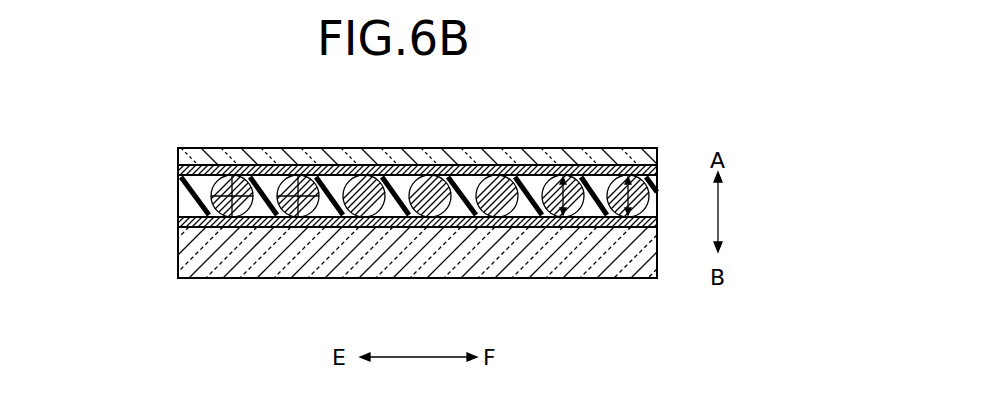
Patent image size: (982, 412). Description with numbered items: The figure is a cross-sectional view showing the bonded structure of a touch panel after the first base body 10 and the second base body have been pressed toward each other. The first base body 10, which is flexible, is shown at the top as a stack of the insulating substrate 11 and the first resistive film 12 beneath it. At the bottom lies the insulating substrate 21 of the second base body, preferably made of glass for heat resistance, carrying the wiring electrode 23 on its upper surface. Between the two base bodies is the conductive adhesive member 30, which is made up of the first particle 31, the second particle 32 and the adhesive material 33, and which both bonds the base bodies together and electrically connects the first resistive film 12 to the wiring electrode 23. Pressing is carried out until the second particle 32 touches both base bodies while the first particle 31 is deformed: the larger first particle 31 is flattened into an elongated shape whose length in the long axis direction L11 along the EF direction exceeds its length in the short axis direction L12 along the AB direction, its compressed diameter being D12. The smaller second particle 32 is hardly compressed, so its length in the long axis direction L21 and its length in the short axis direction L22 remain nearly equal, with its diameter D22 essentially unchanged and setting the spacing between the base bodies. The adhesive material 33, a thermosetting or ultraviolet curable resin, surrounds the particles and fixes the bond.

The first base body 10 is at (113, 138).
The insulating substrate 11 is at (178, 157).
The first resistive film 12 is at (178, 170).
The insulating substrate 21 is at (485, 270).
The wiring electrode 23 is at (350, 227).
The conductive adhesive member 30 is at (439, 157).
The first particle 31 is at (253, 177).
The second particle 32 is at (332, 168).
The adhesive material 33 is at (425, 168).
The length in the long axis direction L11 is at (222, 177).
The length in the long axis direction L21 is at (288, 177).
The length in the short axis direction L12 is at (227, 227).
The length in the short axis direction L22 is at (290, 227).
The diameter of the second particle after compression D22 is at (557, 227).
The diameter of the first particle after compression D12 is at (620, 227).